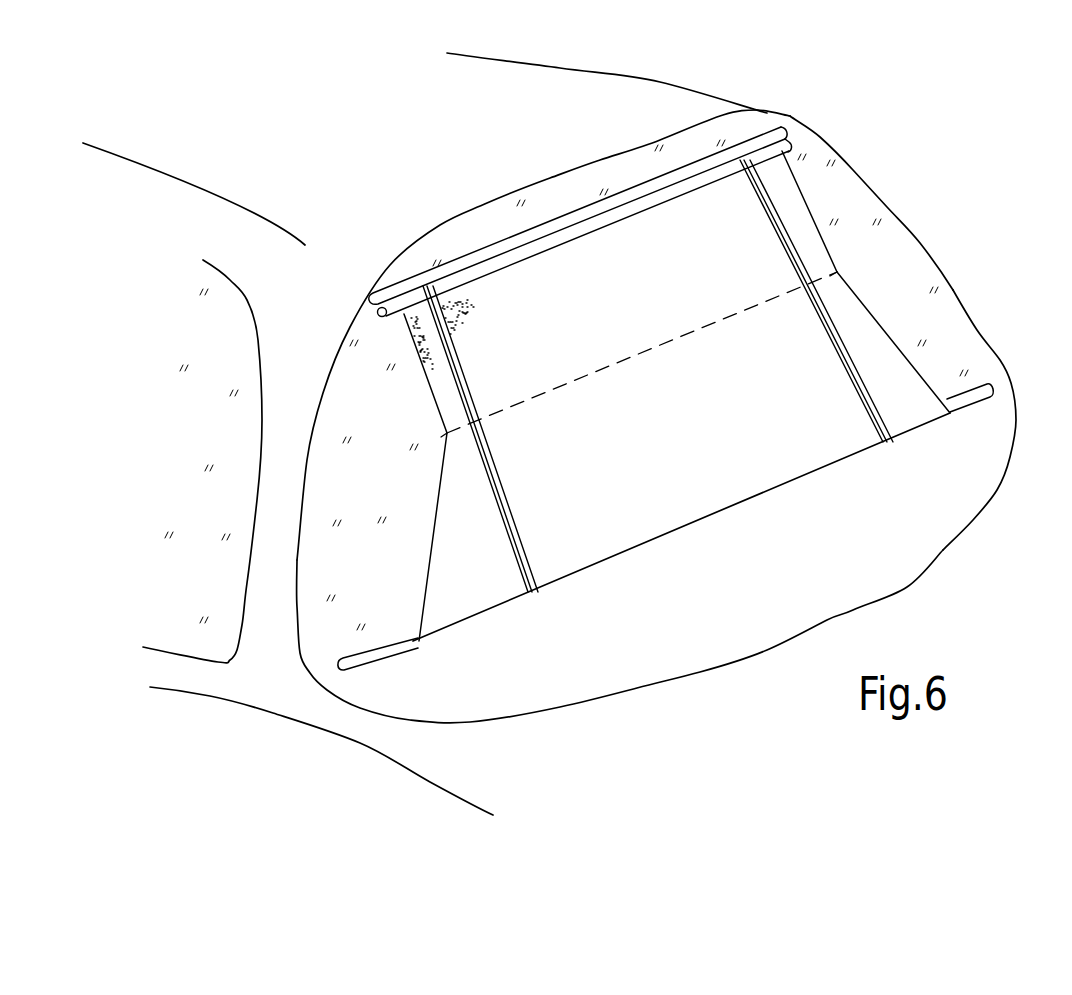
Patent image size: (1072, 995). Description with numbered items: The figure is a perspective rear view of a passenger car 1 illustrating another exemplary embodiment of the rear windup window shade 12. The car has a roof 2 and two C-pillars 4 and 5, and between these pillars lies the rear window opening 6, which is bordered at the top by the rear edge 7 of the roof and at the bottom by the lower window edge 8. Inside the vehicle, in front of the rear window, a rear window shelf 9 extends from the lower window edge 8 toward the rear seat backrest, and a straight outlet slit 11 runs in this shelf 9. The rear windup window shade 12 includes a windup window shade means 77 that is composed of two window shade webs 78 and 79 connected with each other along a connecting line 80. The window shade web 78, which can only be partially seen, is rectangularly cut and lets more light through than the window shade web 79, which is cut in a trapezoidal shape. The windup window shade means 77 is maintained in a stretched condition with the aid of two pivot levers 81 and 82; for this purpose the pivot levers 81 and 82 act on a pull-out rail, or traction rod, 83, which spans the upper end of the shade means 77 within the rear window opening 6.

The passenger car 1 is at (945, 128).
The roof 2 is at (358, 185).
The C-pillar 4 is at (305, 396).
The C-pillar 5 is at (900, 220).
The rear window opening 6 is at (943, 275).
The rear edge of the roof 7 is at (626, 155).
The lower window edge 8 is at (792, 634).
The rear window shelf 9 is at (686, 655).
The outlet slit 11 is at (385, 645).
The rear windup window shade 12 is at (548, 200).
The windup window shade means 77 is at (420, 490).
The window shade web 78 is at (652, 305).
The window shade web 79 is at (686, 455).
The connecting line 80 is at (676, 343).
The pivot lever 81 is at (527, 548).
The pivot lever 82 is at (840, 367).
The pull-out rail 83 is at (757, 143).